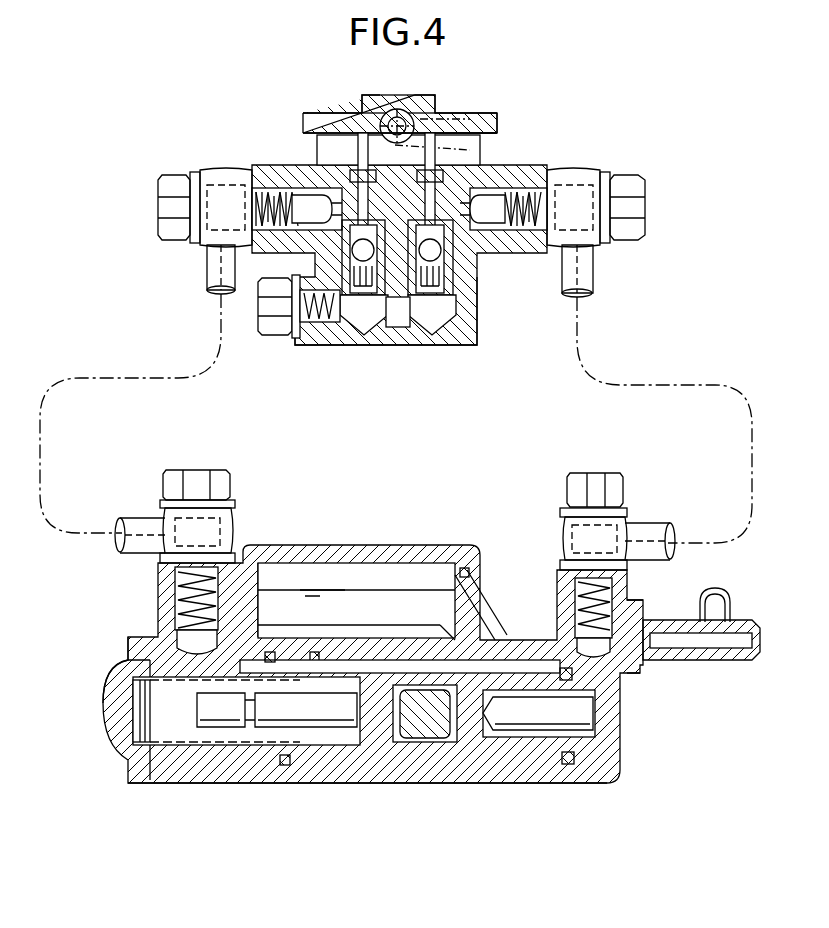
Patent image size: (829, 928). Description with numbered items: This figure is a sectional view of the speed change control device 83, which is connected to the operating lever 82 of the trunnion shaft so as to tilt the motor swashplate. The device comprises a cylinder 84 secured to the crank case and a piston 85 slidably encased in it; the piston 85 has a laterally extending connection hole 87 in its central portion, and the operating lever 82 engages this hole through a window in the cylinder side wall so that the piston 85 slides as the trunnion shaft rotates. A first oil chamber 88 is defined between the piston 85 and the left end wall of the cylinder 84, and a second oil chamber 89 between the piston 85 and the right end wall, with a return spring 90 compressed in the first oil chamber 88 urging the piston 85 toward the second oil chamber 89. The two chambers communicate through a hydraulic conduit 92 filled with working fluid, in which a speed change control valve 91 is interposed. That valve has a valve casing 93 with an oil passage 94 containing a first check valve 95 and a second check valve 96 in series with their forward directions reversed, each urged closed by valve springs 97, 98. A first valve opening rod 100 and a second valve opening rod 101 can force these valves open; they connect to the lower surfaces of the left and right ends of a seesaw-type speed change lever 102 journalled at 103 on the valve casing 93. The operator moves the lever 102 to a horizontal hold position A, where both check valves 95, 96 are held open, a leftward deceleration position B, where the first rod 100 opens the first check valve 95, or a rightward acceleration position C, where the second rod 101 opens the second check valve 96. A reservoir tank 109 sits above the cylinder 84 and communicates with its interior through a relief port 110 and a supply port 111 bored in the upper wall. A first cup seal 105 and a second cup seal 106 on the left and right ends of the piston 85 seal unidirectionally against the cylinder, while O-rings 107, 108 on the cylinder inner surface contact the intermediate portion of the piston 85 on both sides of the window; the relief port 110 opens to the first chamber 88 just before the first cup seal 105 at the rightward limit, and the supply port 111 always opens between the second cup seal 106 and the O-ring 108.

The operating lever 82 is at (424, 728).
The speed change control device 83 is at (318, 812).
The cylinder 84 is at (507, 785).
The piston 85 is at (372, 770).
The connection hole 87 is at (432, 742).
The first oil chamber 88 is at (182, 725).
The second oil chamber 89 is at (608, 770).
The return spring 90 is at (133, 738).
The speed change control valve 91 is at (379, 362).
The hydraulic conduit 92 is at (628, 356).
The valve casing 93 is at (470, 328).
The oil passage 94 is at (402, 313).
The first check valve 95 is at (362, 298).
The second check valve 96 is at (435, 300).
The valve spring 97 is at (345, 305).
The valve spring 98 is at (477, 297).
The first valve opening rod 100 is at (396, 190).
The second valve opening rod 101 is at (495, 202).
The speed change lever 102 is at (303, 126).
The pivot 103 is at (399, 110).
The first cup seal 105 is at (284, 764).
The second cup seal 106 is at (568, 762).
The O-ring 107 is at (316, 653).
The O-ring 108 is at (458, 673).
The reservoir tank 109 is at (470, 583).
The relief port 110 is at (283, 618).
The supply port 111 is at (470, 633).
The hold position A is at (497, 133).
The deceleration position B is at (445, 115).
The acceleration position C is at (445, 152).